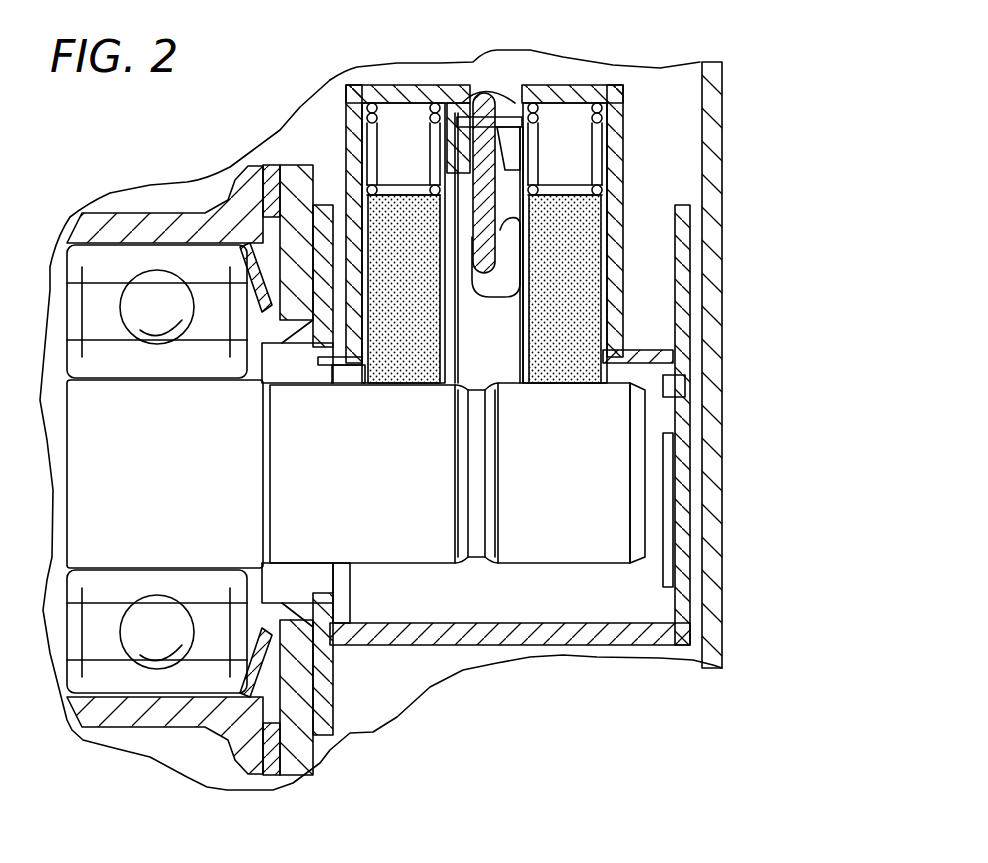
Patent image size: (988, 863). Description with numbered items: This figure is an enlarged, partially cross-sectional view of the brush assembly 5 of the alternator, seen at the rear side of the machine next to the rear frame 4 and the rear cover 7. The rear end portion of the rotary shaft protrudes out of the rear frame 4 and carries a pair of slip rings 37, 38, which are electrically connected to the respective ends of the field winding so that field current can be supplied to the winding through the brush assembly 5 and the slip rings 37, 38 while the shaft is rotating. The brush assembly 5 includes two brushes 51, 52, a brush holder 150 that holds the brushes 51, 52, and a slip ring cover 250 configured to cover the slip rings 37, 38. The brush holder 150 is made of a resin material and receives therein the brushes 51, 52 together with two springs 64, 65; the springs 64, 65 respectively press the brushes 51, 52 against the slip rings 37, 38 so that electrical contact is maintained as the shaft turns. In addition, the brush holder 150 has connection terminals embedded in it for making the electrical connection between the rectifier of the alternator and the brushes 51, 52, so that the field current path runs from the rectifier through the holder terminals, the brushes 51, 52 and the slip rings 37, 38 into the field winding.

The rear frame 4 is at (330, 748).
The brush assembly 5 is at (670, 143).
The rear cover 7 is at (722, 634).
The slip ring 37 is at (422, 538).
The slip ring 38 is at (597, 543).
The brush 51 is at (410, 263).
The brush 52 is at (570, 320).
The spring 64 is at (380, 115).
The spring 65 is at (563, 97).
The brush holder 150 is at (620, 188).
The slip ring cover 250 is at (670, 637).